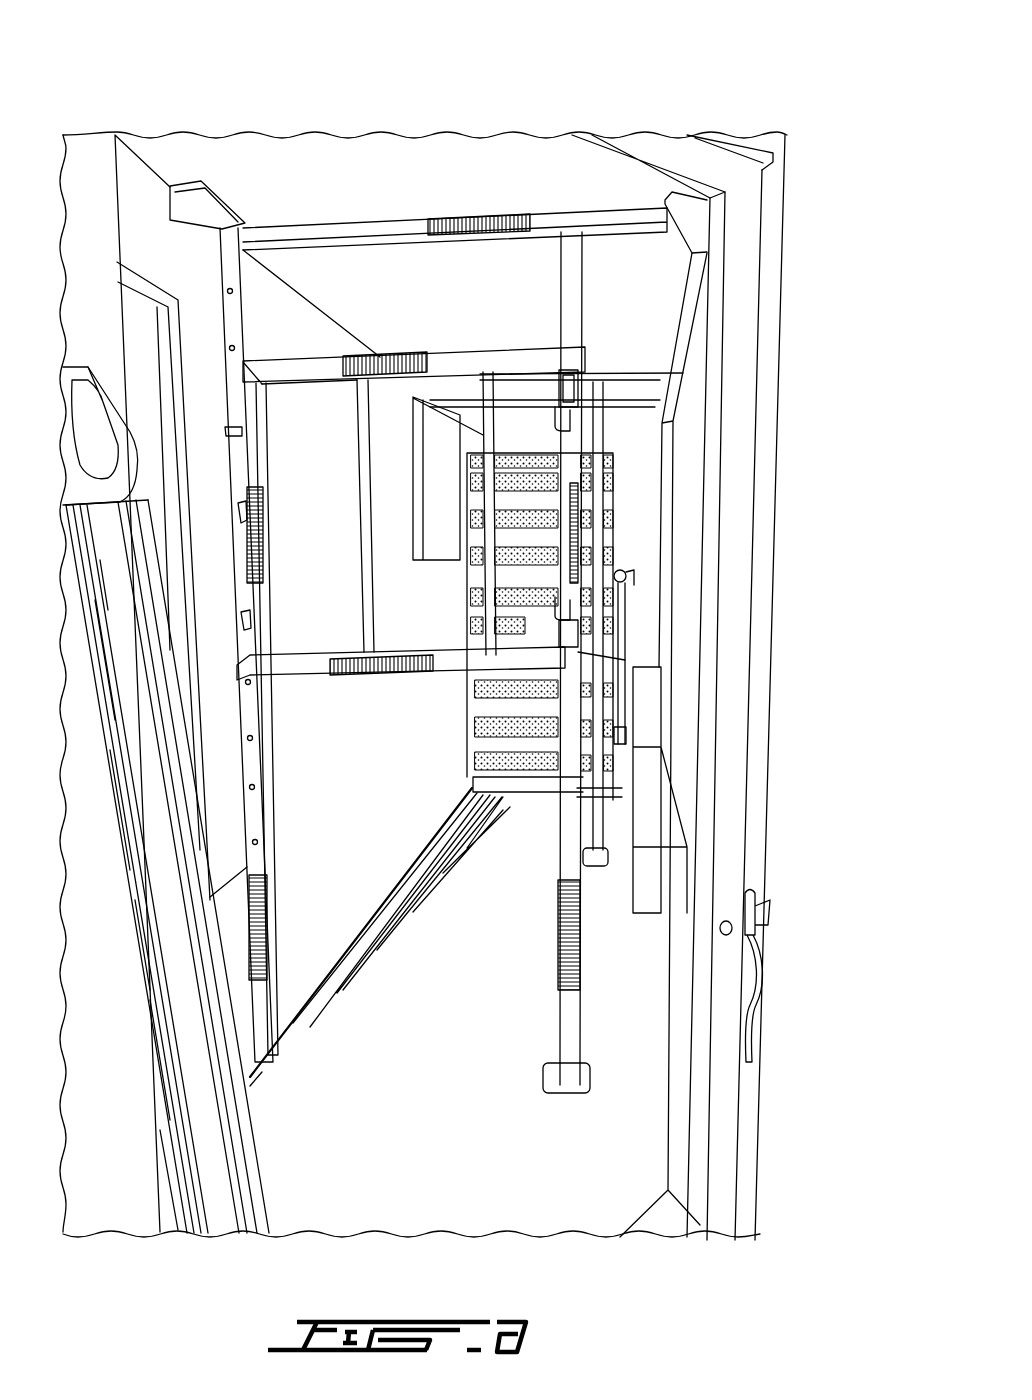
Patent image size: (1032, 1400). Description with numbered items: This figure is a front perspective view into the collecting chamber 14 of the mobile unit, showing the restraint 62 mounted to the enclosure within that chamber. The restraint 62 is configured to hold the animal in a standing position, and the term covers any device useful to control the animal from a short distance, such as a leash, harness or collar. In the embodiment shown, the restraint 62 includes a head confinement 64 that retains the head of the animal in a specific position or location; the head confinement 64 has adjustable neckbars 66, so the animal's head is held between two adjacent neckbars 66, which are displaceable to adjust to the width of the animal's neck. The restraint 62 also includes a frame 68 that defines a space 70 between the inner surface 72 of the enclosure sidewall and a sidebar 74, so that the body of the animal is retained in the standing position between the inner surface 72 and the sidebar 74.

The collecting chamber 14 is at (163, 116).
The restraint 62 is at (196, 510).
The head confinement 64 is at (305, 366).
The adjustable neckbars 66 is at (490, 611).
The frame 68 is at (563, 207).
The space 70 is at (473, 982).
The inner surface 72 is at (375, 792).
The sidebar 74 is at (603, 643).